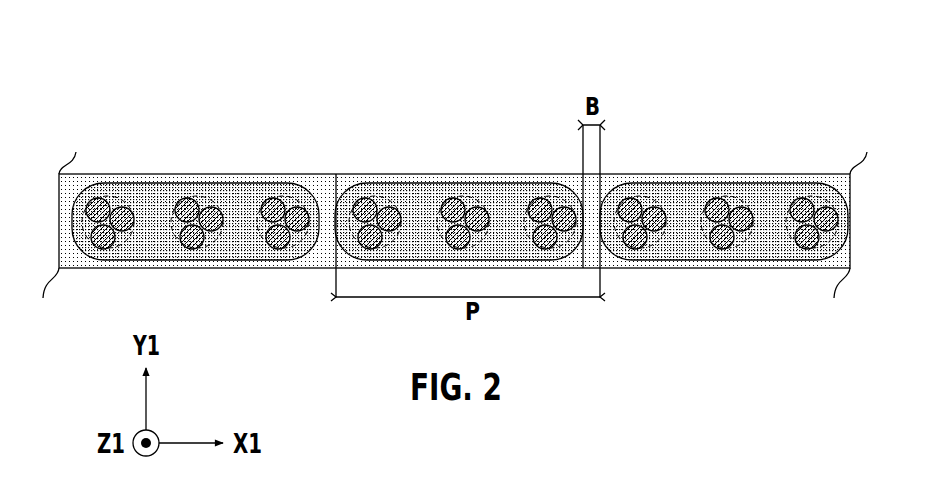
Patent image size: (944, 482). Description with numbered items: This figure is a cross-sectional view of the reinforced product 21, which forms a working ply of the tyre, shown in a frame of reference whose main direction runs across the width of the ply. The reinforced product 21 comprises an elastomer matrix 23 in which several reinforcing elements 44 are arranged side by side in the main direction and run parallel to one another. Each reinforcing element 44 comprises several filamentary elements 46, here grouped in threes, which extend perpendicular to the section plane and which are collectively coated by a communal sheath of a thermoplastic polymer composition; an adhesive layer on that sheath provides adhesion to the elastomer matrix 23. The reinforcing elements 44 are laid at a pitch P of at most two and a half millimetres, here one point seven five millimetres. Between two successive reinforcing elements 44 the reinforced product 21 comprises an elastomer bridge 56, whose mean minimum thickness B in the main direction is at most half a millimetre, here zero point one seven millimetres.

The reinforced product 21 is at (455, 193).
The elastomer matrix 23 is at (328, 176).
The reinforcing element 44 is at (222, 175).
The filamentary element 46 is at (252, 236).
The elastomer bridge 56 is at (327, 246).